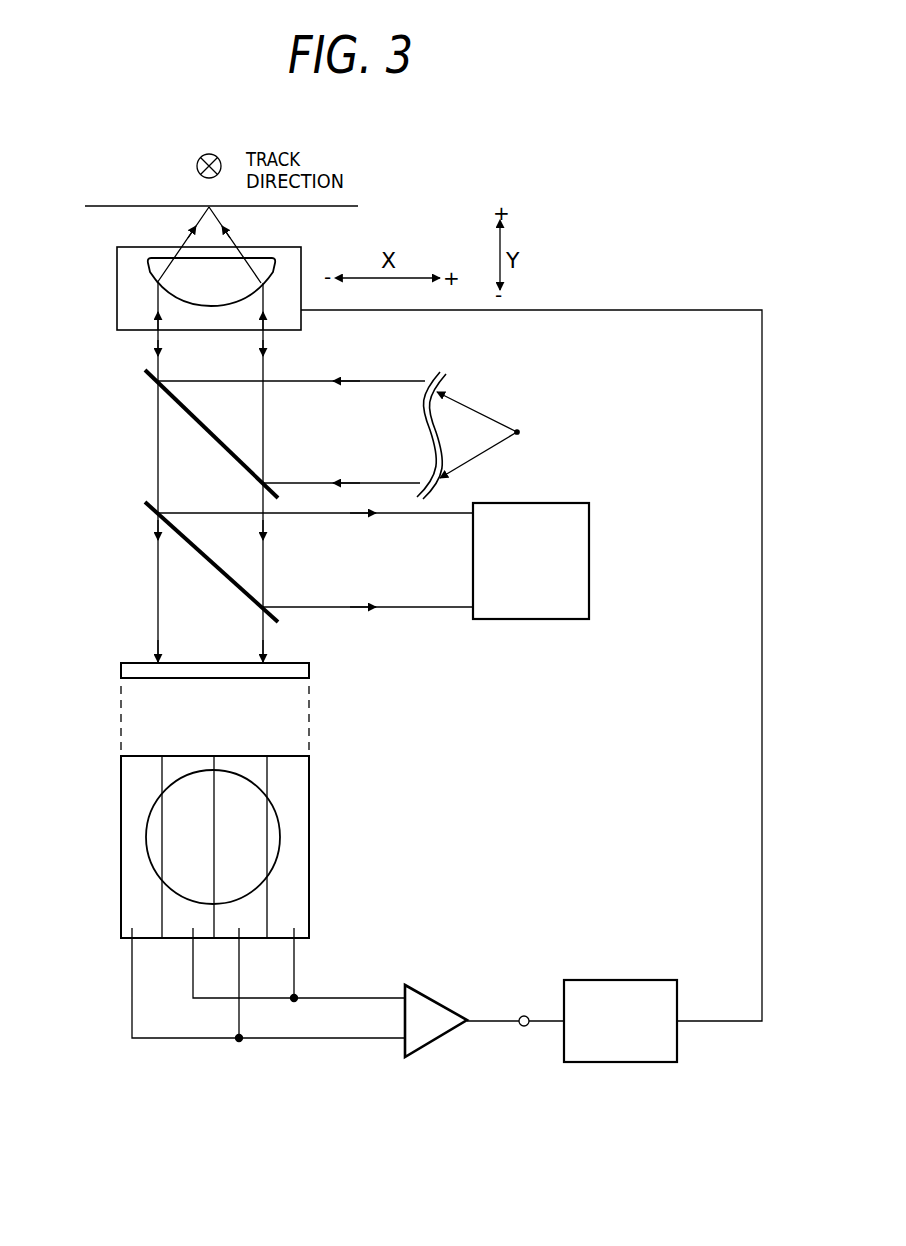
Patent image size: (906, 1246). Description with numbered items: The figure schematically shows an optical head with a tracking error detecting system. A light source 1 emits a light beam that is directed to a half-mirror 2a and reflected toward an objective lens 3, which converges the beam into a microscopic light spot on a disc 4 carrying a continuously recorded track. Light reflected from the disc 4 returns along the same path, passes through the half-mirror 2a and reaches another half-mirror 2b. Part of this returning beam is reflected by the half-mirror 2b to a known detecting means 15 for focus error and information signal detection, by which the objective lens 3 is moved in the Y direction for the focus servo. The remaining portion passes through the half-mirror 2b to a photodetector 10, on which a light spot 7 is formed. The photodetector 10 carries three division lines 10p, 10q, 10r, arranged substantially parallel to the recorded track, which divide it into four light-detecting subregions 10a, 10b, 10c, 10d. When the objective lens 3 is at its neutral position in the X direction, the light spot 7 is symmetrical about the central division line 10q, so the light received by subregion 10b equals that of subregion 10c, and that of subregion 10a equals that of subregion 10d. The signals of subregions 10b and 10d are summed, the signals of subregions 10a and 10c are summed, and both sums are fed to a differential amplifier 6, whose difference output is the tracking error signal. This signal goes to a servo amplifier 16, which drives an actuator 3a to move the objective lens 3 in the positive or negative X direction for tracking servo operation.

The light source 1 is at (518, 425).
The half-mirror 2a is at (147, 382).
The half-mirror 2b is at (147, 512).
The objective lens 3 is at (145, 278).
The actuator 3a is at (137, 310).
The disc 4 is at (102, 206).
The differential amplifier 6 is at (432, 994).
The light spot 7 is at (240, 842).
The photodetector 10 is at (214, 800).
The light-detecting subregion 10a is at (147, 763).
The light-detecting subregion 10b is at (190, 763).
The light-detecting subregion 10c is at (245, 768).
The light-detecting subregion 10d is at (288, 797).
The division line 10p is at (158, 855).
The central division line 10q is at (215, 910).
The division line 10r is at (267, 915).
The detecting means 15 is at (574, 503).
The servo amplifier 16 is at (660, 980).